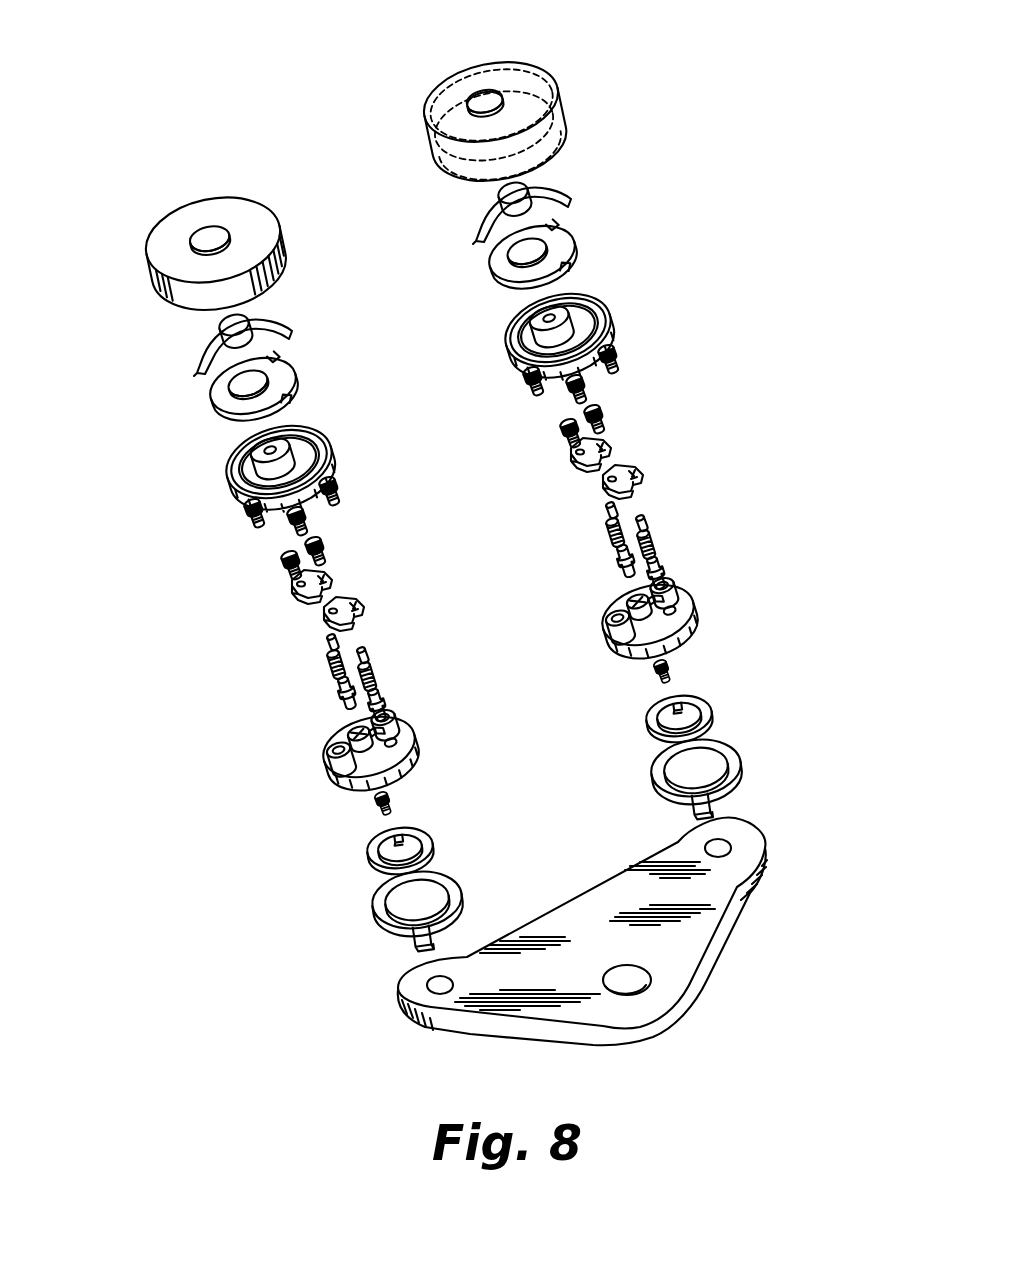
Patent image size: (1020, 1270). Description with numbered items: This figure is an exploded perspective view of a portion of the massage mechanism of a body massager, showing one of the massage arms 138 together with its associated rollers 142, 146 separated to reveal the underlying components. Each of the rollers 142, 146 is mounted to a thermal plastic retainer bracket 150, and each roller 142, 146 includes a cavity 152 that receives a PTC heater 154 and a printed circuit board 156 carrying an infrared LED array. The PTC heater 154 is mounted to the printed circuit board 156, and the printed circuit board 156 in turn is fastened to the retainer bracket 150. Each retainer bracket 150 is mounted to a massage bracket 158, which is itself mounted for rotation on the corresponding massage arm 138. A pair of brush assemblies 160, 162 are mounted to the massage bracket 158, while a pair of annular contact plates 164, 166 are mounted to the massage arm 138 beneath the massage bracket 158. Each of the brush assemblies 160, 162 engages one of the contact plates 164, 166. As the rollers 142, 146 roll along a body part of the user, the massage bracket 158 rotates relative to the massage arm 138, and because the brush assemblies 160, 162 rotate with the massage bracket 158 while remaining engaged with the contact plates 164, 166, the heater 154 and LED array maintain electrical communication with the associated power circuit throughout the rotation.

The massage arm 138 is at (717, 943).
The roller 142 is at (557, 113).
The roller 146 is at (148, 273).
The retainer bracket 150 is at (613, 330).
The cavity 152 is at (562, 128).
The PTC heater 154 is at (562, 187).
The printed circuit board 156 is at (576, 256).
The massage bracket 158 is at (696, 617).
The brush assembly 160 is at (570, 460).
The brush assembly 162 is at (689, 591).
The contact plate 164 is at (644, 726).
The contact plate 166 is at (652, 781).